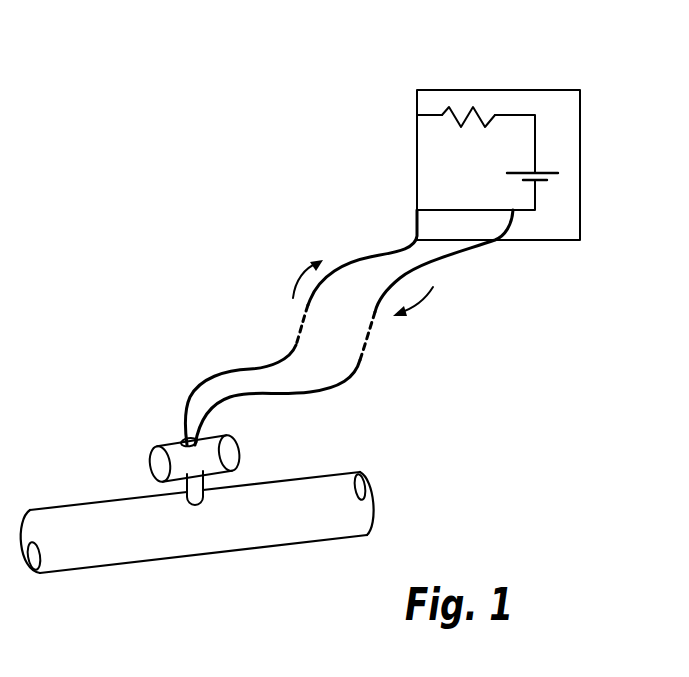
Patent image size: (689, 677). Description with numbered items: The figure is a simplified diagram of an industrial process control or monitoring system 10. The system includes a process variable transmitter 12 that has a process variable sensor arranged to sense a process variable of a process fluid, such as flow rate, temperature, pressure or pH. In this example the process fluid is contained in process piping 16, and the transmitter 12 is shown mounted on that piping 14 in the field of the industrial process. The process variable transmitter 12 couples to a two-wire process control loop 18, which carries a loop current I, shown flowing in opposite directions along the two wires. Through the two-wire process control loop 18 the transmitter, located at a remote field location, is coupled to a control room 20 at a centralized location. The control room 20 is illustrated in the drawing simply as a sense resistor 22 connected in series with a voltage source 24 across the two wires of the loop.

The industrial process control or monitoring system 10 is at (230, 200).
The process variable transmitter 12 is at (163, 445).
The pipe 14 is at (197, 513).
The process piping 16 is at (183, 555).
The two-wire process control loop 18 is at (249, 392).
The control room 20 is at (520, 140).
The sense resistor 22 is at (478, 113).
The voltage source 24 is at (547, 170).